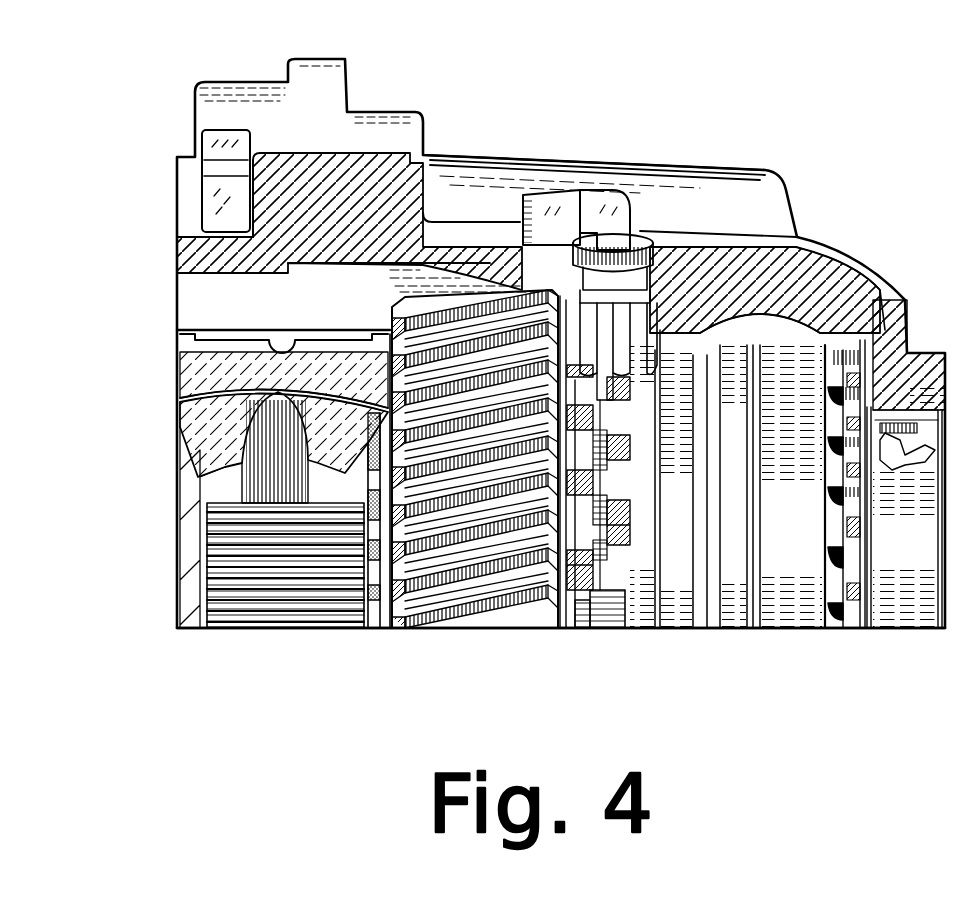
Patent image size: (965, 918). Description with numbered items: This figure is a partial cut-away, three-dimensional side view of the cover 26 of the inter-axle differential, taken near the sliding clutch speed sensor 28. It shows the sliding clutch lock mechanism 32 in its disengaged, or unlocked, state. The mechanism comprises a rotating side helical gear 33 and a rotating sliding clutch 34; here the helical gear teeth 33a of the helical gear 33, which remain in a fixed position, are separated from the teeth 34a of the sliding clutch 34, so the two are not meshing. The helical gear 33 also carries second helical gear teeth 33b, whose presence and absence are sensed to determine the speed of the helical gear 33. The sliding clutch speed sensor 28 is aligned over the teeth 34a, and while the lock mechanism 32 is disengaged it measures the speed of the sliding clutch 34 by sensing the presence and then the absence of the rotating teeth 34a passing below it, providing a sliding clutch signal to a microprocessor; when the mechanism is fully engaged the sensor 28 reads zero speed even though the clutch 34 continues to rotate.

The sliding clutch lock mechanism 32 is at (645, 112).
The cover 26 is at (737, 170).
The sliding clutch speed sensor 28 is at (555, 200).
The rotating side helical gear 33 is at (397, 628).
The helical gear teeth 33a is at (578, 600).
The second helical gear teeth 33b is at (455, 545).
The sliding clutch 34 is at (673, 560).
The sliding clutch teeth 34a is at (620, 560).